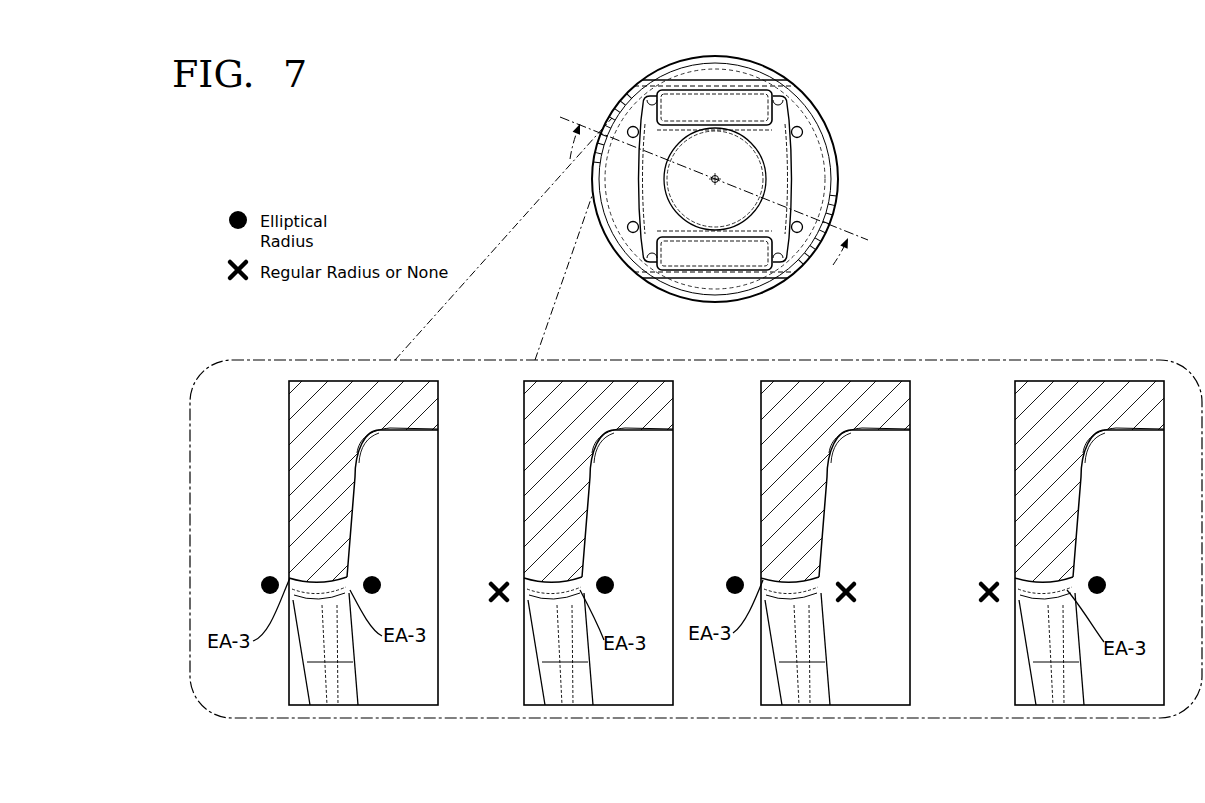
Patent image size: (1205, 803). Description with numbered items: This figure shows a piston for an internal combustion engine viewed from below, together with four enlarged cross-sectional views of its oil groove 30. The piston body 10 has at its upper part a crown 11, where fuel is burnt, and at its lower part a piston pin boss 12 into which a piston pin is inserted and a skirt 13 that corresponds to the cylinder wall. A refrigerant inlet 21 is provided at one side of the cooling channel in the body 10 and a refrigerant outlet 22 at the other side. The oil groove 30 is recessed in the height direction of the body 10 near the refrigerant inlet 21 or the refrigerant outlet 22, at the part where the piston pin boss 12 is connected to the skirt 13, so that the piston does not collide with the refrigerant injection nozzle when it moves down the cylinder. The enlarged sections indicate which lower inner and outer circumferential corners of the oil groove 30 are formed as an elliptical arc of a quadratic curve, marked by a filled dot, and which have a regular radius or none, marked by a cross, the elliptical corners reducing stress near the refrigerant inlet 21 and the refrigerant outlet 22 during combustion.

The body 10 is at (702, 162).
The crown 11 is at (760, 78).
The piston pin boss 12 is at (716, 102).
The skirt 13 is at (600, 190).
The refrigerant inlet 21 is at (628, 127).
The refrigerant outlet 22 is at (803, 226).
The oil groove 30 is at (597, 141).